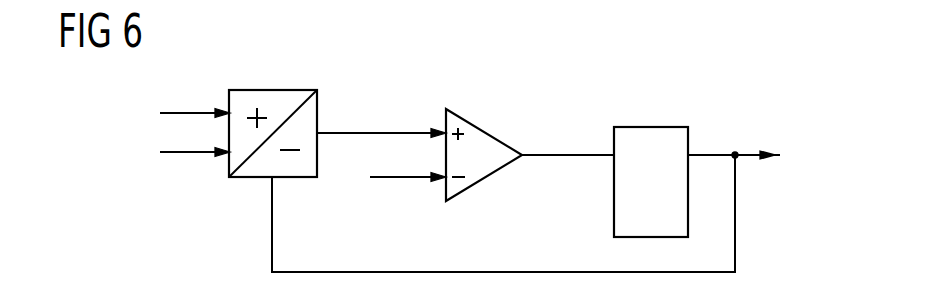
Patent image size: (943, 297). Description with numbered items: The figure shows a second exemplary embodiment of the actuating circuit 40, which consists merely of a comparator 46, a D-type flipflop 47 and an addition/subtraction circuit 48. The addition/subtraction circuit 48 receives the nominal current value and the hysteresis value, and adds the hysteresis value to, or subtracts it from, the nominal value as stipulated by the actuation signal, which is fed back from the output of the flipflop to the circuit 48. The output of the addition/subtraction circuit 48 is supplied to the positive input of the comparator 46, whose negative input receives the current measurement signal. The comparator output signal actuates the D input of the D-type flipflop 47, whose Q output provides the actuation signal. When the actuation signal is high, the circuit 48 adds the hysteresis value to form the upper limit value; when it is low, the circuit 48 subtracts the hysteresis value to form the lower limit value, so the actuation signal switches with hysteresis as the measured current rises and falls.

The actuating circuit 40 is at (397, 61).
The comparator 46 is at (481, 128).
The D-type flipflop 47 is at (648, 127).
The addition/subtraction circuit 48 is at (272, 90).